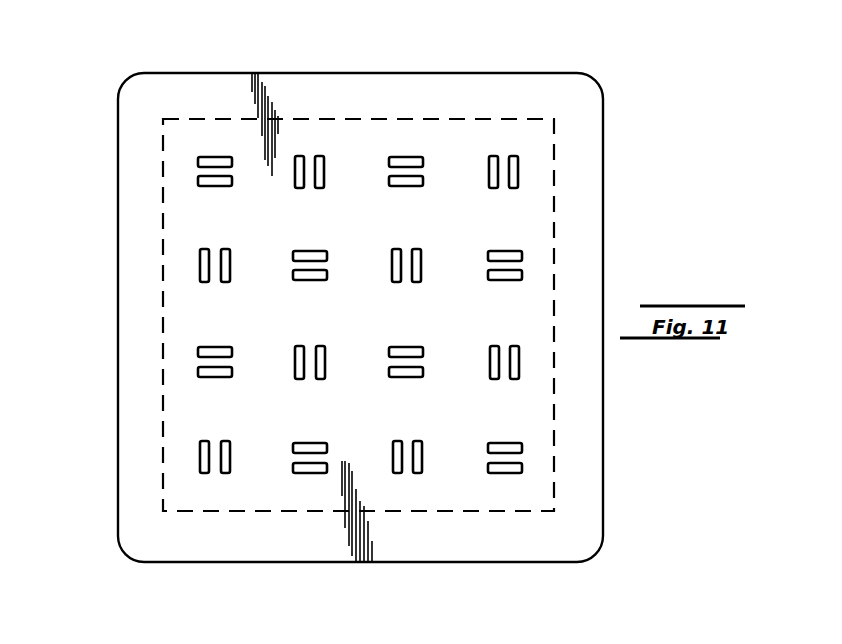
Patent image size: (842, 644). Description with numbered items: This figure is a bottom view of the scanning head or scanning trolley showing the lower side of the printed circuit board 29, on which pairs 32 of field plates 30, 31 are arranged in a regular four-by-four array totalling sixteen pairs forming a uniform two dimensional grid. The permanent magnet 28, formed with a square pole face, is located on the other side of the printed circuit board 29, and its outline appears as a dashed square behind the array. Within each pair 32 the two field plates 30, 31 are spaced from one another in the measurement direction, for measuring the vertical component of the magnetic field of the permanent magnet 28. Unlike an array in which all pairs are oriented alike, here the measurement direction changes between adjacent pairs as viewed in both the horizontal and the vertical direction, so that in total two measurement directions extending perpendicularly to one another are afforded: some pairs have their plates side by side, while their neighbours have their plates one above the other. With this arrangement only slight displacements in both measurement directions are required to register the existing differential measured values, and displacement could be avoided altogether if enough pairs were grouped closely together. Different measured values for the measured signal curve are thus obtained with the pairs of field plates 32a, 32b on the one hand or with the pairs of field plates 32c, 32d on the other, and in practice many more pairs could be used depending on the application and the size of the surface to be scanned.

The permanent magnet 28 is at (554, 480).
The printed circuit board 29 is at (413, 548).
The field plate 30 is at (491, 160).
The field plate 31 is at (520, 160).
The pair of field plates 32 is at (563, 102).
The pair of field plates 32a is at (522, 241).
The pair of field plates 32b is at (508, 490).
The pair of field plates 32c is at (188, 265).
The pair of field plates 32d is at (384, 254).